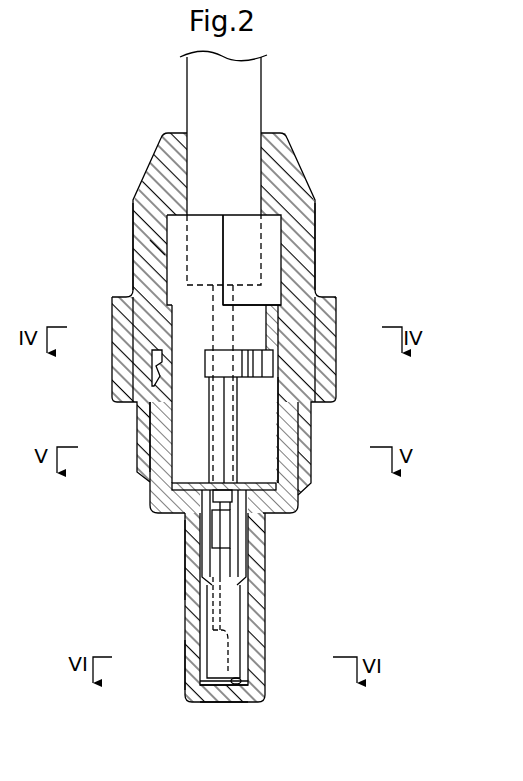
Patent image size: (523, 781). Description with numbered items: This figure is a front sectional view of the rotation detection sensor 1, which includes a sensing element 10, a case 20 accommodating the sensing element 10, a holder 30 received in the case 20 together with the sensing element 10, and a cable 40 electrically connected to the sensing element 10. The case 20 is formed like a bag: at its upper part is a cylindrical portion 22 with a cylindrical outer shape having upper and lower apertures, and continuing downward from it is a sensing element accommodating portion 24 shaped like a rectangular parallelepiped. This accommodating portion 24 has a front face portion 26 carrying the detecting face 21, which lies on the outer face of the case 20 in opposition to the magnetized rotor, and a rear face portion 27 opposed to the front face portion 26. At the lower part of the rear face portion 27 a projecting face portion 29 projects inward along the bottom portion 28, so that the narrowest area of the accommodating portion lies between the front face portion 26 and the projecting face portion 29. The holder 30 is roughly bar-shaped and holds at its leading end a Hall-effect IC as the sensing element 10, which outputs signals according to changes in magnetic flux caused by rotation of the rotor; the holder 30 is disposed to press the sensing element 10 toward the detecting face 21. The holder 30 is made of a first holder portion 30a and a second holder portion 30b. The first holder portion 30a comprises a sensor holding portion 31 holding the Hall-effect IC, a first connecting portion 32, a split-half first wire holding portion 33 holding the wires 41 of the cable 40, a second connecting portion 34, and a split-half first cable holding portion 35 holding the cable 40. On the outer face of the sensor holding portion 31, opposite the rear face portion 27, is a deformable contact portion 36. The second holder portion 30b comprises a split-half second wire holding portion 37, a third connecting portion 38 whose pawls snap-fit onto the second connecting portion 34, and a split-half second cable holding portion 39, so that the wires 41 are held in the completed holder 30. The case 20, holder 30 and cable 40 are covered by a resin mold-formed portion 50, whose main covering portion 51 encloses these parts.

The rotation detection sensor 1 is at (378, 150).
The sensing element 10 is at (208, 630).
The case 20 is at (300, 494).
The detecting face 21 is at (187, 658).
The cylindrical portion 22 is at (157, 428).
The sensing element accommodating portion 24 is at (198, 487).
The front face portion 26 is at (185, 545).
The rear face portion 27 is at (263, 583).
The bottom portion 28 is at (210, 685).
The projecting face portion 29 is at (240, 686).
The holder 30 is at (288, 172).
The first holder portion 30a is at (284, 245).
The second holder portion 30b is at (163, 250).
The sensor holding portion 31 is at (207, 603).
The first connecting portion 32 is at (243, 553).
The first wire holding portion 33 is at (260, 427).
The second connecting portion 34 is at (252, 363).
The first cable holding portion 35 is at (270, 272).
The deformable contact portion 36 is at (252, 632).
The second wire holding portion 37 is at (153, 392).
The third connecting portion 38 is at (253, 325).
The second cable holding portion 39 is at (165, 290).
The cable 40 is at (186, 97).
The wires 41 is at (226, 522).
The mold-formed portion 50 is at (140, 192).
The main covering portion 51 is at (307, 185).